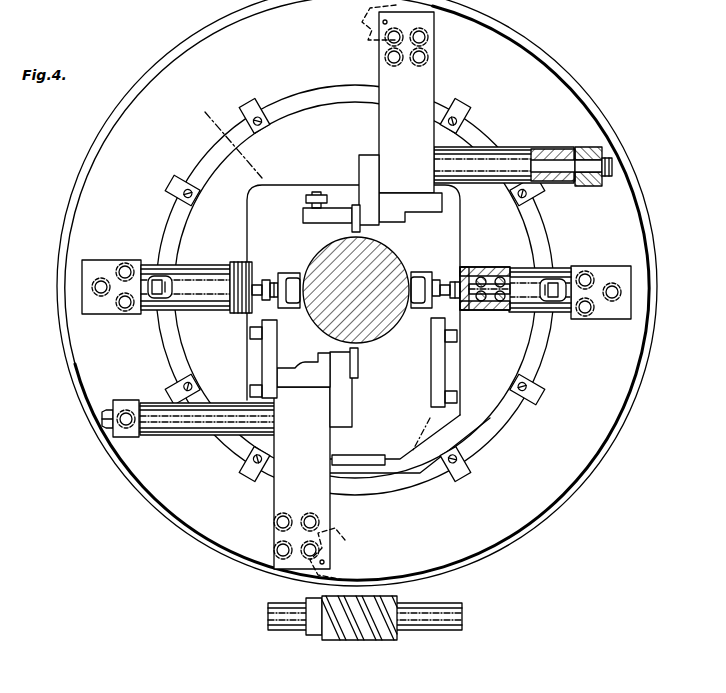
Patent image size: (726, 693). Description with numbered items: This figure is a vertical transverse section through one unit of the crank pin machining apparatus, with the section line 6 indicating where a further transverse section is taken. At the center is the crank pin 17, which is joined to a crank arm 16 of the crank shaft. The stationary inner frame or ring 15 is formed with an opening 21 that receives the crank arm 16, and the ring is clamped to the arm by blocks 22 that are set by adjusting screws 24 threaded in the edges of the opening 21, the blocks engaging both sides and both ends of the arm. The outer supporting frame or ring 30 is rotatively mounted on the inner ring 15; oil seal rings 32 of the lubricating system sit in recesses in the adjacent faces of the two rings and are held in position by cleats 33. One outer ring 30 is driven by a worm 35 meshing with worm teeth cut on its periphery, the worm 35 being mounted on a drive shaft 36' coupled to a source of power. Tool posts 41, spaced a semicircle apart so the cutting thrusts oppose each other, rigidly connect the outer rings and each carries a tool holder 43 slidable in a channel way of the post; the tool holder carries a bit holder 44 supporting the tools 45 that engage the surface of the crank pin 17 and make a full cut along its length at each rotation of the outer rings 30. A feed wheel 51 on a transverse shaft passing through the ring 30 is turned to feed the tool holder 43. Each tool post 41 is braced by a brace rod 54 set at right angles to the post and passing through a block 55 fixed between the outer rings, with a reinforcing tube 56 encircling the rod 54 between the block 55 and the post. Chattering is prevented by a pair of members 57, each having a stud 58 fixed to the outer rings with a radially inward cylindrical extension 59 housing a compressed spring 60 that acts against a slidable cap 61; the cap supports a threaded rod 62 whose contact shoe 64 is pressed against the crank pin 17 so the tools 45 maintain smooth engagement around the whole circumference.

The section line 6 is at (232, 138).
The stationary inner frame or ring member 15 is at (355, 290).
The crank arm 16 is at (429, 416).
The crank pin 17 is at (384, 330).
The opening 21 is at (300, 236).
The block 22 is at (446, 362).
The adjusting screw 24 is at (458, 392).
The outer supporting frame or ring 30 is at (595, 436).
The oil seal ring 32 is at (485, 435).
The cleat 33 is at (535, 390).
The worm 35 is at (350, 640).
The drive shaft 36' is at (362, 629).
The tool post 41 is at (426, 78).
The tool holder 43 is at (368, 160).
The bit holder 44 is at (312, 218).
The tool 45 is at (349, 352).
The feed wheel 51 is at (365, 14).
The brace rod 54 is at (551, 165).
The block or stud 55 is at (604, 150).
The reinforcing tube 56 is at (516, 152).
The member 57 is at (188, 312).
The stud 58 is at (100, 262).
The cylindrical extension 59 is at (193, 268).
The compressed spring 60 is at (478, 268).
The cap 61 is at (238, 314).
The threaded rod 62 is at (500, 278).
The contact shoe 64 is at (290, 280).